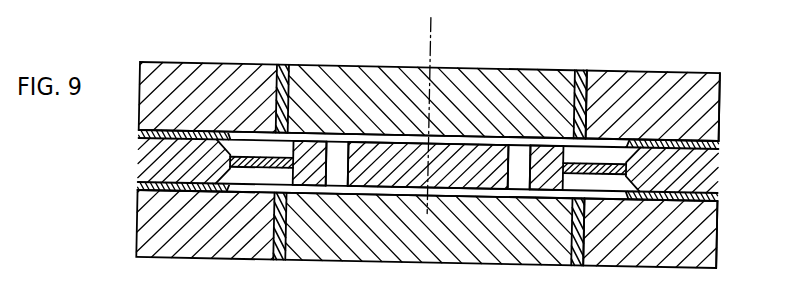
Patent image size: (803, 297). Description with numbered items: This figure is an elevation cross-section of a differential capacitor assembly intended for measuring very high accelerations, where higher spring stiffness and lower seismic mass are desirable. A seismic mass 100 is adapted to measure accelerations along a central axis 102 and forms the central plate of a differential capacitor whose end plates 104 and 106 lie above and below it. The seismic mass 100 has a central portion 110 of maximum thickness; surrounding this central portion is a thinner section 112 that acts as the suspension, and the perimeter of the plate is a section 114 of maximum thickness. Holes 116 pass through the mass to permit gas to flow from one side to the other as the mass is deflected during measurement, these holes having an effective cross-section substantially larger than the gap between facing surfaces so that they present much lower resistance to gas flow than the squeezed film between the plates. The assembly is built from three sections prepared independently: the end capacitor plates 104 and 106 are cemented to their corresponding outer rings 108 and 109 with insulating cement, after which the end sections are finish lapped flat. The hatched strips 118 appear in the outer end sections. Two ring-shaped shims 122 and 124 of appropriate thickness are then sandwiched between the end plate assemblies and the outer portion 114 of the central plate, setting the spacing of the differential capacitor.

The seismic mass 100 is at (473, 165).
The central axis 102 is at (437, 23).
The end plate 104 is at (323, 248).
The end plate 106 is at (368, 68).
The outer ring 108 is at (715, 233).
The outer ring 109 is at (713, 108).
The central portion 110 is at (477, 190).
The thinner section 112 is at (607, 177).
The section of maximum thickness 114 is at (713, 167).
The holes 116 is at (528, 190).
The insulating strip 118 is at (578, 68).
The ring-shaped shim 122 is at (717, 195).
The ring-shaped shim 124 is at (717, 147).